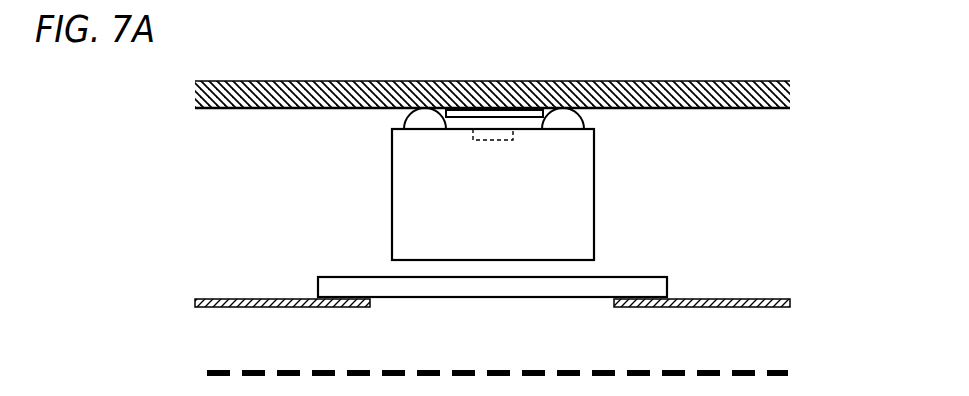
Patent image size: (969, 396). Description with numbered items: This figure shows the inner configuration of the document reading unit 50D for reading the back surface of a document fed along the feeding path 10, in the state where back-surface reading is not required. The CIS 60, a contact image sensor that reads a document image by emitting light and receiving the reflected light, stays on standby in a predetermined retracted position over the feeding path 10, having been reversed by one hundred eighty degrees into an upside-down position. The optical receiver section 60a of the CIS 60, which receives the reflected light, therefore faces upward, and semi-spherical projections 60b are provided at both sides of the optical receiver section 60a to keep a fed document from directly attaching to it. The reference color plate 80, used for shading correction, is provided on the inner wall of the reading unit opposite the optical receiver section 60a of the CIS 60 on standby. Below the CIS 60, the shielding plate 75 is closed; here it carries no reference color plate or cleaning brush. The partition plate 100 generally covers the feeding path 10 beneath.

The document reading unit 50D is at (608, 74).
The CIS 60 is at (596, 243).
The optical receiver section 60a is at (512, 133).
The semi-spherical projections 60b is at (423, 113).
The reference color plate 80 is at (467, 106).
The shielding plate 75 is at (350, 282).
The partition plate 100 is at (272, 297).
The feeding path 10 is at (250, 372).